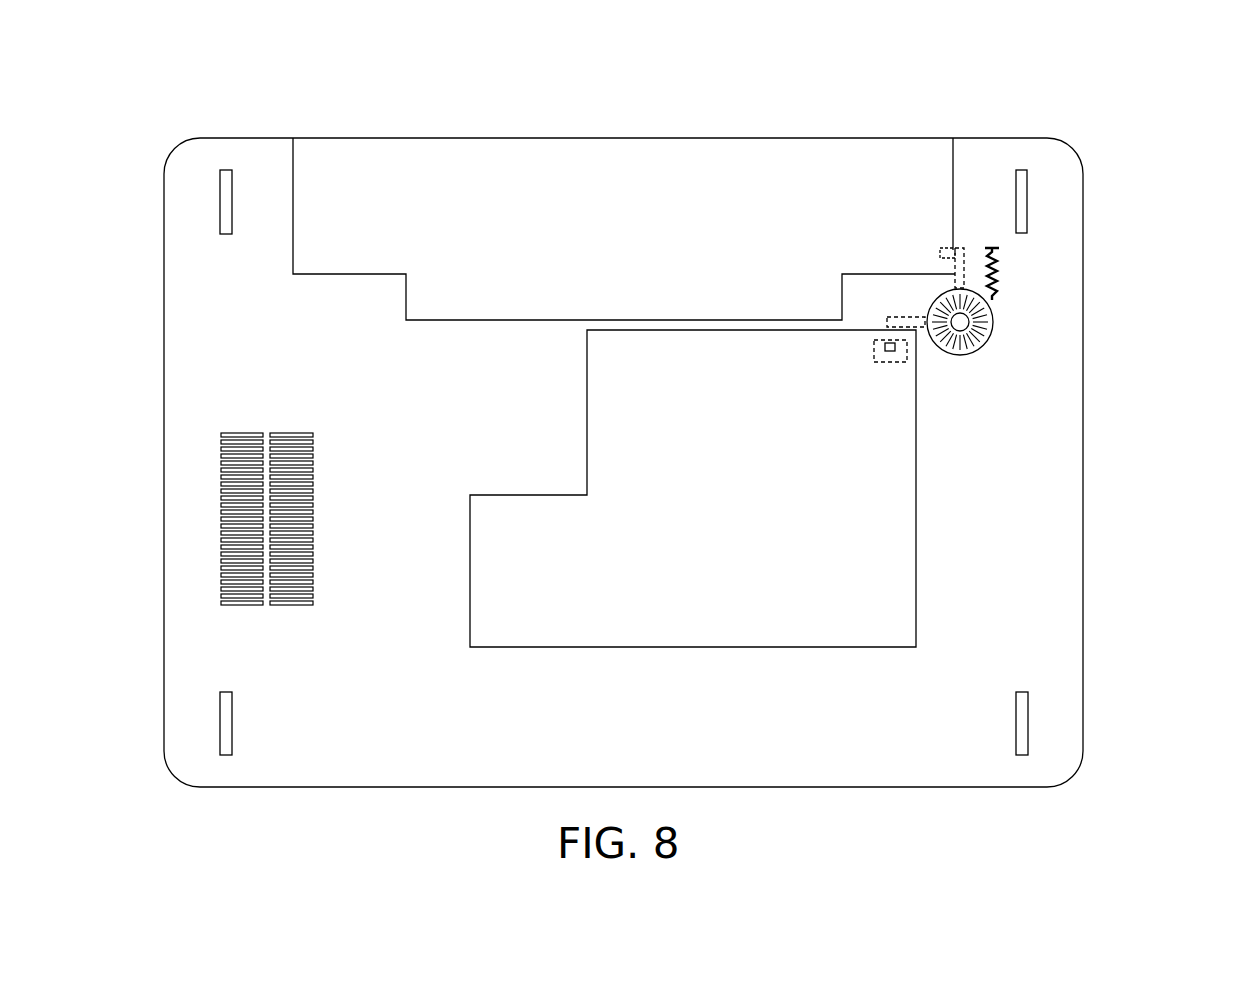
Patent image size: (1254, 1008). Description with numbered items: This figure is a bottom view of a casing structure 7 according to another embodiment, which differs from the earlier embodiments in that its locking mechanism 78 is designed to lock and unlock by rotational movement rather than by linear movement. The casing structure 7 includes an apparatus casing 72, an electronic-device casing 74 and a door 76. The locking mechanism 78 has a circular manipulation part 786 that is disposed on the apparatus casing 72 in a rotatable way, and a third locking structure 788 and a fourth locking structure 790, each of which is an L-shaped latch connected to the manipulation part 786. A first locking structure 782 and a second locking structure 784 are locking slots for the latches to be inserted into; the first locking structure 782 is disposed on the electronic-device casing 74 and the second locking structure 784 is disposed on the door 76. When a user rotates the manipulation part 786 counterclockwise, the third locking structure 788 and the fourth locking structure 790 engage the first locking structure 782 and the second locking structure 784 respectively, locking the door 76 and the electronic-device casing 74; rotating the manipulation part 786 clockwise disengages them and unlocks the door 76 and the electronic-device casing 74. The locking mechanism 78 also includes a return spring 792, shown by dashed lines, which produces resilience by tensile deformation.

The casing structure 7 is at (1014, 88).
The apparatus casing 72 is at (1065, 475).
The electronic-device casing 74 is at (700, 150).
The door 76 is at (902, 591).
The locking mechanism 78 is at (1064, 297).
The first locking structure 782 is at (946, 252).
The second locking structure 784 is at (892, 360).
The manipulation part 786 is at (993, 320).
The third locking structure 788 is at (997, 276).
The fourth locking structure 790 is at (890, 335).
The return spring 792 is at (997, 256).